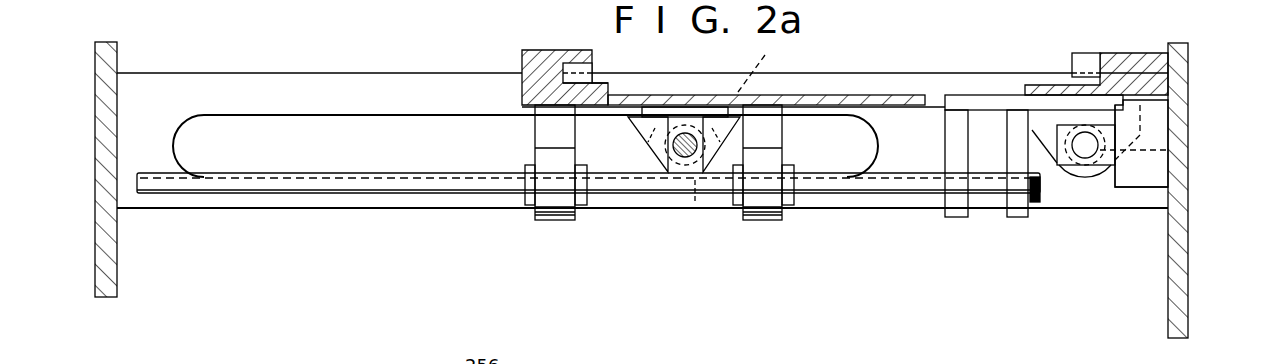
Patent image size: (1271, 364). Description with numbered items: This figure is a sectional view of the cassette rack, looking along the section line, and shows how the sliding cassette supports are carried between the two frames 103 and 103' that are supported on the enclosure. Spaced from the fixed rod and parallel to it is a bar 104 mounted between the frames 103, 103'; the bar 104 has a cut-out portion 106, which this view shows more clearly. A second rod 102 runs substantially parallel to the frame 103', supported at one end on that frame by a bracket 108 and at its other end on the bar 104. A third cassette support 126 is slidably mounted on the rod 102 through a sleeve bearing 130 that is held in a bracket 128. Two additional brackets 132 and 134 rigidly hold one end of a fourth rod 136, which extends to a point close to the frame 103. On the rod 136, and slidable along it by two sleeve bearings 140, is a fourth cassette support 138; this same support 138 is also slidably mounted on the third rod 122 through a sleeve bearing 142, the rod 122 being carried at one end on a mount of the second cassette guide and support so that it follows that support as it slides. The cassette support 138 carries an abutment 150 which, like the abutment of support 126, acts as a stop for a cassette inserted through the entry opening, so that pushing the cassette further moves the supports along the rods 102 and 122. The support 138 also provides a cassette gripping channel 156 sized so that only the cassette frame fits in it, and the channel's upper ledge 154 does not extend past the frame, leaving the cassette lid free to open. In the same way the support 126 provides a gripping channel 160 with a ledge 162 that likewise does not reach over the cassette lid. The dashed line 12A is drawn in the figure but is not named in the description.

The frame 103 is at (137, 169).
The frame 103' is at (1209, 190).
The bar 104 is at (295, 83).
The cut-out portion 106 is at (397, 117).
The fourth rod 136 is at (477, 193).
The abutment 150 is at (576, 58).
The upper ledge 154 is at (592, 60).
The cassette gripping channel 156 is at (578, 78).
The axis 12A is at (773, 69).
The fourth cassette support 138 is at (852, 97).
The sleeve bearings 140 is at (582, 203).
The sleeve bearing 142 is at (693, 218).
The third rod 122 is at (682, 155).
The third cassette support 126 is at (1000, 63).
The bracket 132 is at (955, 216).
The bracket 134 is at (1017, 216).
The gripping channel 160 is at (1095, 65).
The ledge 162 is at (1072, 60).
The sleeve bearing 130 is at (1188, 148).
The bracket 108 is at (1153, 176).
The bracket 128 is at (1073, 170).
The second rod 102 is at (1083, 160).